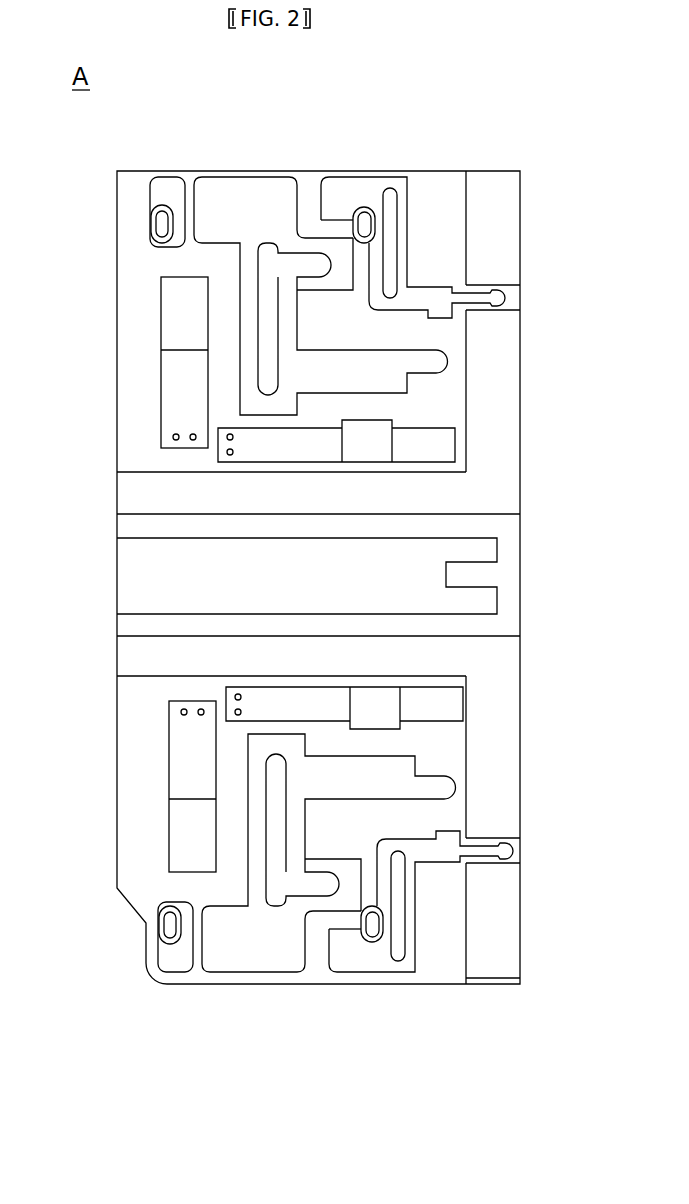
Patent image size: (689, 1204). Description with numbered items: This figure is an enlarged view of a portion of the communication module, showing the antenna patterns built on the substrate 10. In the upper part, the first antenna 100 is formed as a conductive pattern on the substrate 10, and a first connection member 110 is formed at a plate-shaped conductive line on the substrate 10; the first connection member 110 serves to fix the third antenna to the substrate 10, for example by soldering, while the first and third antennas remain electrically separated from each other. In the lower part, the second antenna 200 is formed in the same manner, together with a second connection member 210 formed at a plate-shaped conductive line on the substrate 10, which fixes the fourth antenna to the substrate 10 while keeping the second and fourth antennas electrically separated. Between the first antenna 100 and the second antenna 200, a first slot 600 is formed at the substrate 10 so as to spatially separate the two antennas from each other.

The substrate 10 is at (95, 189).
The first antenna 100 is at (234, 186).
The first connection member 110 is at (365, 222).
The second antenna 200 is at (247, 950).
The second connection member 210 is at (191, 760).
The first slot 600 is at (453, 523).